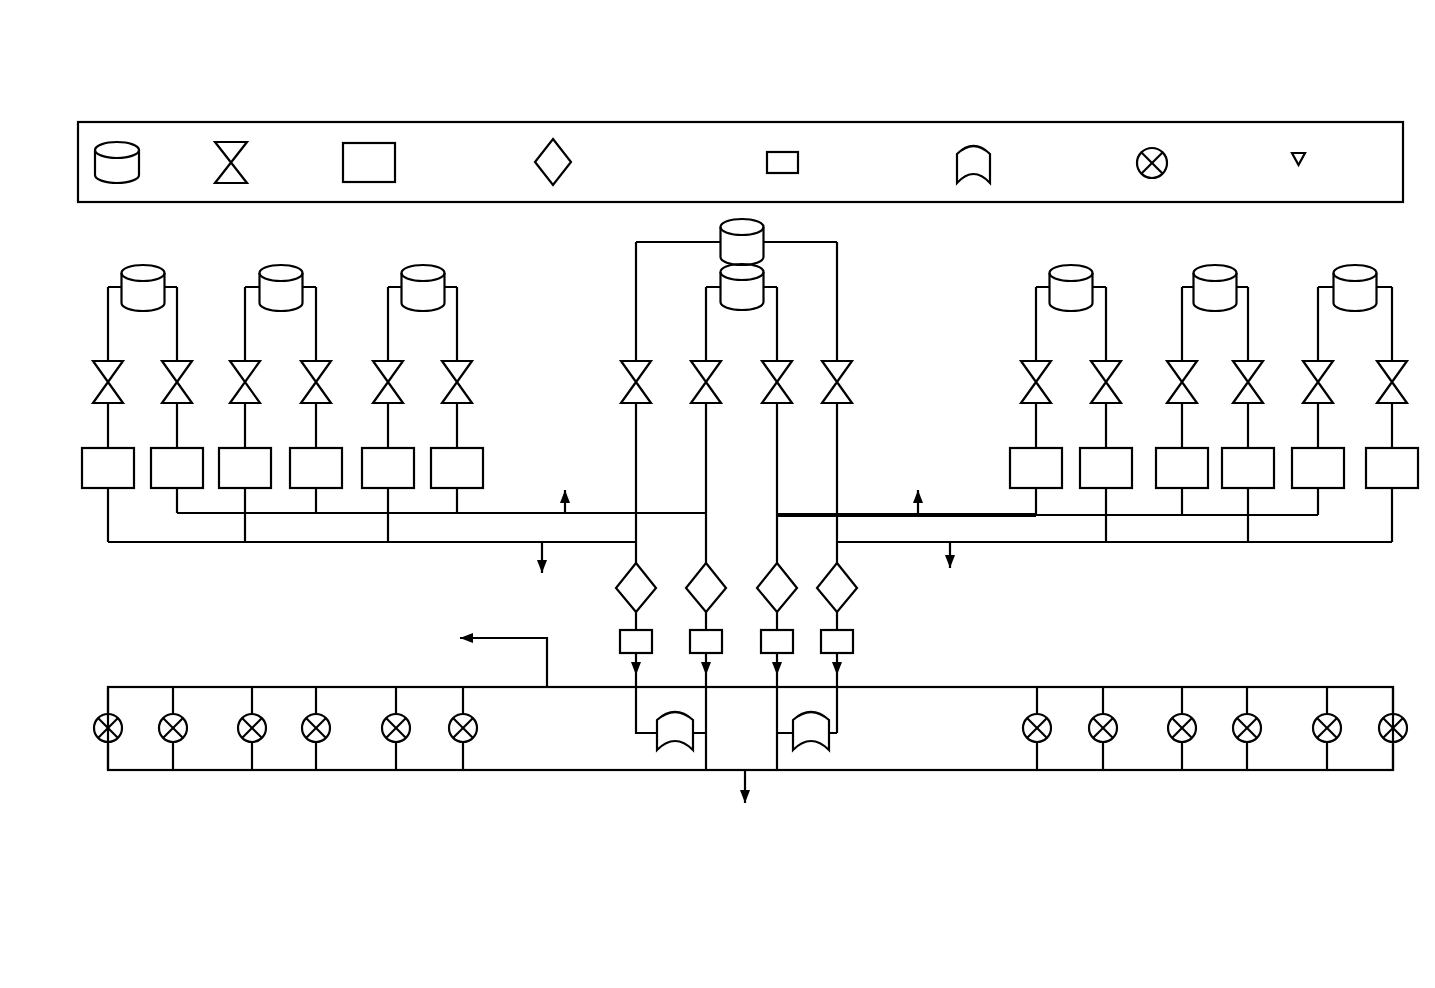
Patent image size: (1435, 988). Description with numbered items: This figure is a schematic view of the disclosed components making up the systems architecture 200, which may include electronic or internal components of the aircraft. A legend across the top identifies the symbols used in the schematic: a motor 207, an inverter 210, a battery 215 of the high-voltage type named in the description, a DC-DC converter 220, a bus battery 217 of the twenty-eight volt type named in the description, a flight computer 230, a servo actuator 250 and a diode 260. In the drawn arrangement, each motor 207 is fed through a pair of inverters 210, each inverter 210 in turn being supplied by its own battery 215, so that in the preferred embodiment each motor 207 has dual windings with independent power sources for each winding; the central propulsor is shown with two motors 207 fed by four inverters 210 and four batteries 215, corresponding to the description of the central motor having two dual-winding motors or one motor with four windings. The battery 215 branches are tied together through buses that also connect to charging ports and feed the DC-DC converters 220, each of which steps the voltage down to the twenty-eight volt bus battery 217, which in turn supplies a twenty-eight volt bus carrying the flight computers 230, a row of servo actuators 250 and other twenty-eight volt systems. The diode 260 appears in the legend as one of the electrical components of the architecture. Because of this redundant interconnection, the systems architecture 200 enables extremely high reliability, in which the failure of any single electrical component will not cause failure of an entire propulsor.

The systems architecture 200 is at (443, 92).
The motor 207 is at (117, 145).
The inverter 210 is at (233, 143).
The battery 215 is at (372, 143).
The battery 217 is at (783, 152).
The DC-DC converter 220 is at (553, 140).
The flight computer 230 is at (973, 142).
The servo actuator 250 is at (1152, 148).
The diode 260 is at (1298, 152).